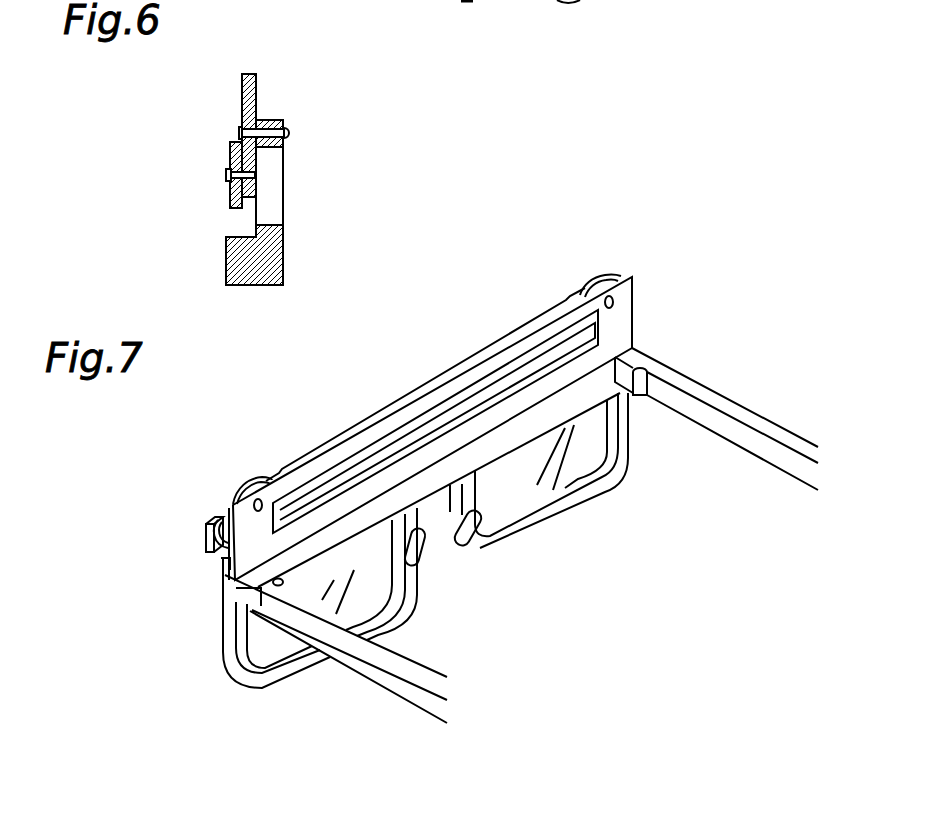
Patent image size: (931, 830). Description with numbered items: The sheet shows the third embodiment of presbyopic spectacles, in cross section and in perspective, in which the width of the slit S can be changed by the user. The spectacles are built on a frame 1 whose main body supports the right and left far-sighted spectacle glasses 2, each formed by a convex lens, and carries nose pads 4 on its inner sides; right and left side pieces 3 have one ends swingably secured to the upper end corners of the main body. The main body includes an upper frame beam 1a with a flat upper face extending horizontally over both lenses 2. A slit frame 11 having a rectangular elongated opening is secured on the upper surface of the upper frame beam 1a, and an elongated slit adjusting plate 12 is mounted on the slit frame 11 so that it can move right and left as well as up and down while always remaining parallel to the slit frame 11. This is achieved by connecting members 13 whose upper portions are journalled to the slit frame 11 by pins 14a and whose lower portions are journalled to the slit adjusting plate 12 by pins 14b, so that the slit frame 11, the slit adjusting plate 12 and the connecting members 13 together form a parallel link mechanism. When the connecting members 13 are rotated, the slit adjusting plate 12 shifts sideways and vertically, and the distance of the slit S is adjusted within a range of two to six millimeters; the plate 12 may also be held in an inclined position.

In FIG. 7, the frame 1 is at (617, 477).
In FIG. 7, the upper frame beam 1a is at (580, 398).
In FIG. 7, the far-sighted spectacle glasses 2 is at (360, 578).
In FIG. 7, the side pieces 3 is at (757, 423).
In FIG. 7, the nose pads 4 is at (420, 545).
In FIG. 6, the slit frame 11 is at (270, 253).
In FIG. 7, the slit frame 11 is at (368, 440).
In FIG. 6, the slit adjusting plate 12 is at (230, 153).
In FIG. 7, the slit adjusting plate 12 is at (212, 523).
In FIG. 6, the connecting members 13 is at (258, 82).
In FIG. 7, the connecting members 13 is at (240, 487).
In FIG. 6, the pins 14a is at (292, 134).
In FIG. 7, the pins 14a is at (260, 500).
In FIG. 6, the pins 14b is at (227, 178).
In FIG. 6, the slit S is at (273, 180).
In FIG. 7, the slit S is at (440, 427).